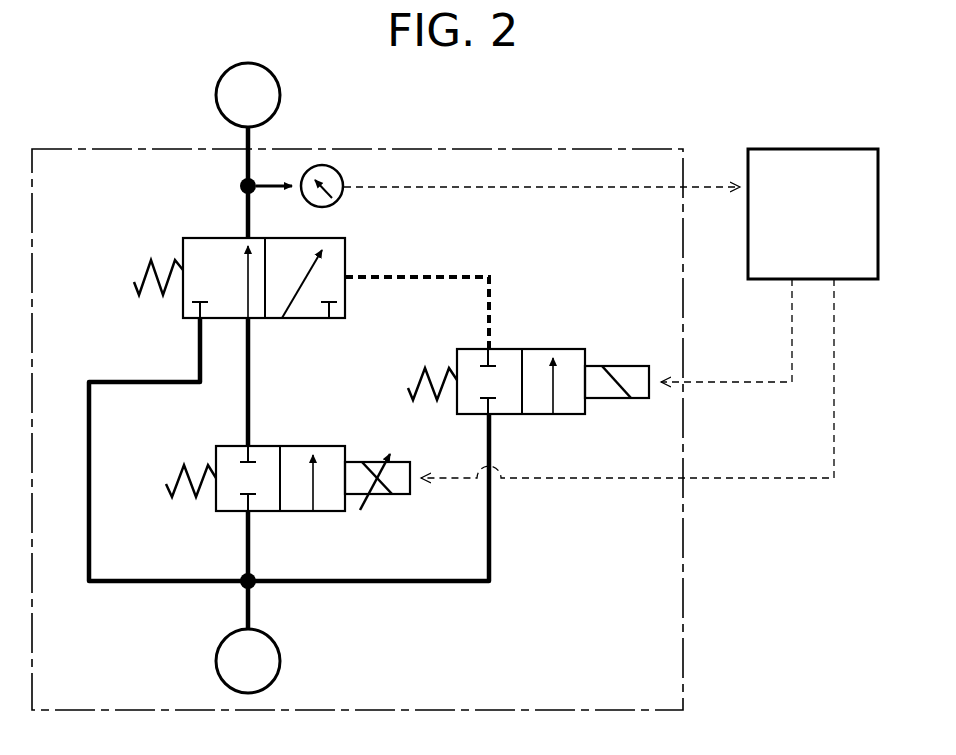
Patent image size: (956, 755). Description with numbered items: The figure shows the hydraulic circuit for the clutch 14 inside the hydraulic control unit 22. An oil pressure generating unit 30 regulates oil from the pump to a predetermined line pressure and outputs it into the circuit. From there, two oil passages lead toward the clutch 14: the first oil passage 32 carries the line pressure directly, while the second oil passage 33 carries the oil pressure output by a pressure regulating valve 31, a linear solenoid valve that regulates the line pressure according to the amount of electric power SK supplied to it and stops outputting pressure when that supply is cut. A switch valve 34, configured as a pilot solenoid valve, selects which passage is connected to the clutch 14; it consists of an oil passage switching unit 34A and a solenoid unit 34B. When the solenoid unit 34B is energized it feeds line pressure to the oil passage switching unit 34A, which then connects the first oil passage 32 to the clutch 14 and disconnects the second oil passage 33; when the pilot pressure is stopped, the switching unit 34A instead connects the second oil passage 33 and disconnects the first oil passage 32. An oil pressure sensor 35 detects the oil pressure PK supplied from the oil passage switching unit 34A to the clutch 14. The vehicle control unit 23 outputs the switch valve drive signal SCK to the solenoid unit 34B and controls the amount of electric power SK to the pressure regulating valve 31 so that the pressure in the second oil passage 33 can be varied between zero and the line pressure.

The clutch 14 is at (280, 93).
The hydraulic control unit 22 is at (683, 617).
The vehicle control unit 23 is at (858, 279).
The oil pressure generating unit 30 is at (280, 661).
The pressure regulating valve 31 is at (327, 511).
The first oil passage 32 is at (91, 480).
The second oil passage 33 is at (250, 408).
The switch valve 34 is at (397, 326).
The oil passage switching unit 34A is at (303, 318).
The solenoid unit 34B is at (565, 349).
The oil pressure sensor 35 is at (338, 202).
The oil pressure (clutch supply pressure) PK is at (542, 174).
The switch valve drive signal SCK is at (726, 331).
The amount of electric power SK is at (627, 378).